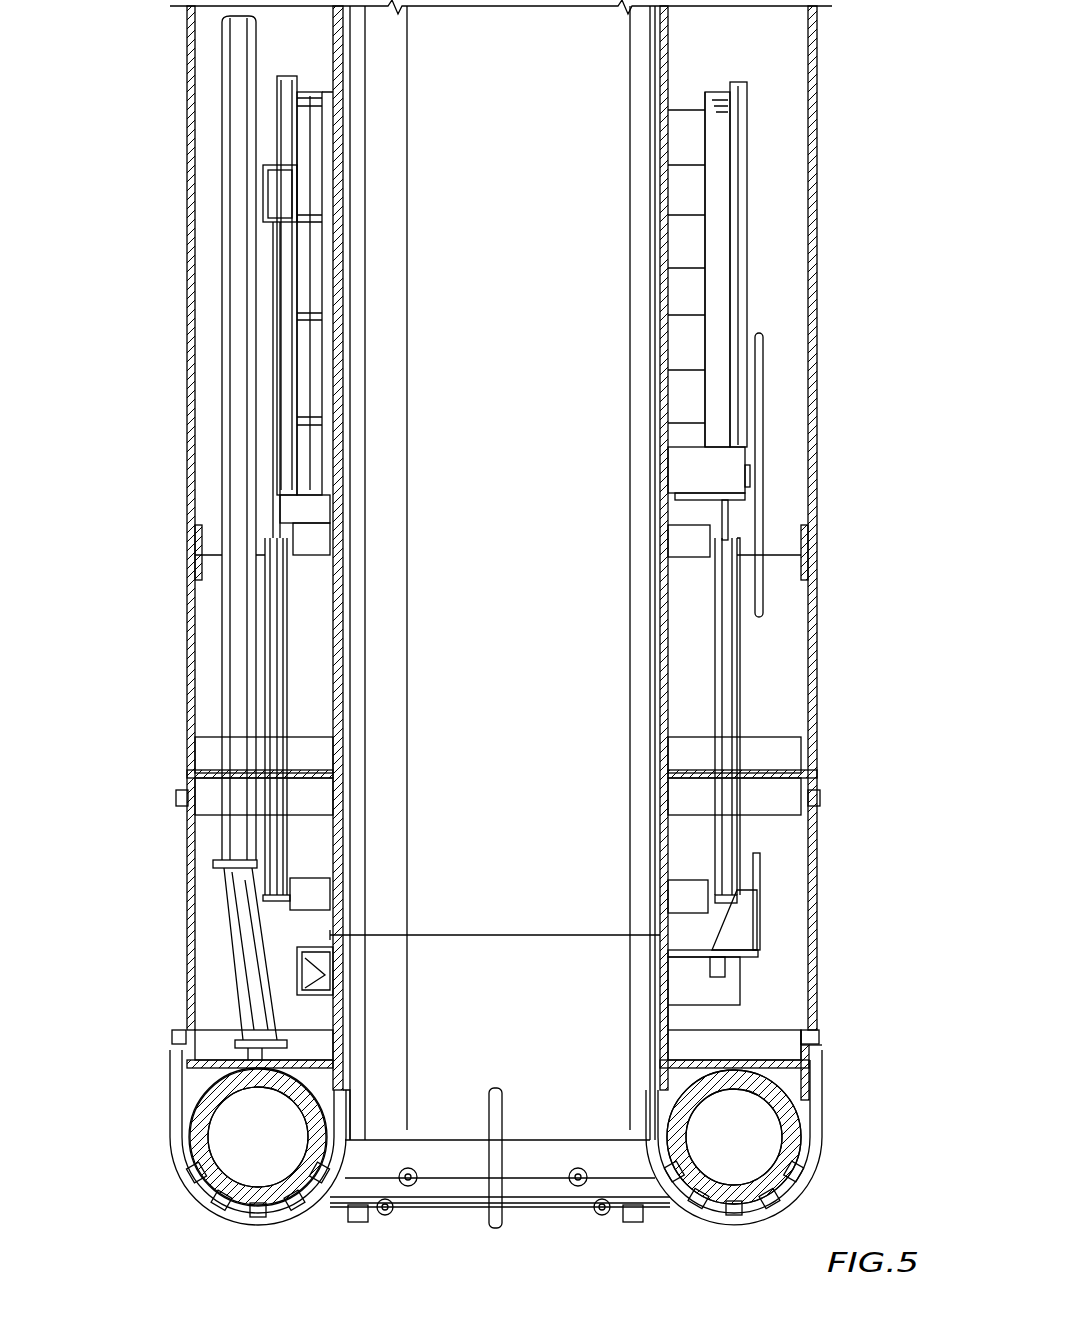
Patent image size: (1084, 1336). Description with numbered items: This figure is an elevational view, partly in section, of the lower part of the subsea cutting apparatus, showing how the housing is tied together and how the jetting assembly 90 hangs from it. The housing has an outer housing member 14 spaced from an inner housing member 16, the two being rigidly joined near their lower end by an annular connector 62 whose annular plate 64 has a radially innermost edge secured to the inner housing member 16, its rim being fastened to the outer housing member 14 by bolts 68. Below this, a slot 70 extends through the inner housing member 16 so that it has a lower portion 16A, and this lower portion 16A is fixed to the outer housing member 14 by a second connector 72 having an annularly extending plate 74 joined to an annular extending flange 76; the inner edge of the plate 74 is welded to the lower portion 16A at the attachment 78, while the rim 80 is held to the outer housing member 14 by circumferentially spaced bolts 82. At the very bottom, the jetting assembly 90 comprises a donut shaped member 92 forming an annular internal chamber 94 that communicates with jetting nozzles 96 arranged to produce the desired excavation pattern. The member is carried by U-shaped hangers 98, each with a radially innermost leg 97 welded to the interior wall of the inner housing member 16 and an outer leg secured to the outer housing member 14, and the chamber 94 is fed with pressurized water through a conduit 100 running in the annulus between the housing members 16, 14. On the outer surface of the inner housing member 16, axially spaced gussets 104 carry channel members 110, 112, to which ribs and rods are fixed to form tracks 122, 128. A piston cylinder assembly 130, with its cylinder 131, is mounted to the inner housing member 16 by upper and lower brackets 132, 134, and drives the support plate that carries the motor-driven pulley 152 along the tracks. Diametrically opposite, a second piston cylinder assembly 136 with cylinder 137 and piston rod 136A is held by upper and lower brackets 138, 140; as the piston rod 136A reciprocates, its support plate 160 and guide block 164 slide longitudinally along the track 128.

The outer housing member 14 is at (187, 96).
The inner housing member 16 is at (660, 72).
The lower portion of inner housing member 16A is at (680, 1020).
The annular connector 62 is at (770, 730).
The annular plate 64 is at (783, 772).
The bolts 68 is at (822, 792).
The slot 70 is at (527, 932).
The second connector 72 is at (210, 1023).
The annularly extending plate 74 is at (810, 1090).
The annular extending flange 76 is at (812, 1037).
The attachment of plate to inner housing member 78 is at (662, 1058).
The rim 80 is at (815, 1065).
The bolts 82 is at (172, 1048).
The jetting assembly 90 is at (150, 1197).
The donut shaped member 92 is at (196, 1148).
The internal chamber 94 is at (258, 1137).
The jetting nozzles 96 is at (200, 1207).
The radially innermost leg 97 is at (660, 1120).
The U-shaped hangers 98 is at (497, 1215).
The conduit 100 is at (232, 625).
The second set of axially spaced gussets 104 is at (677, 137).
The channel member 110 is at (310, 128).
The channel member 112 is at (717, 185).
The track 122 is at (740, 268).
The track 128 is at (288, 262).
The piston cylinder assembly 130 is at (748, 645).
The cylinder 131 is at (725, 678).
The upper bracket 132 is at (677, 544).
The lower bracket 134 is at (677, 890).
The second piston cylinder assembly 136 is at (300, 720).
The piston rod 136A is at (272, 370).
The cylinder 137 is at (285, 655).
The upper bracket 138 is at (318, 540).
The lower bracket 140 is at (318, 895).
The pulley 152 is at (763, 378).
The support plate 160 is at (265, 203).
The guide block 164 is at (285, 178).